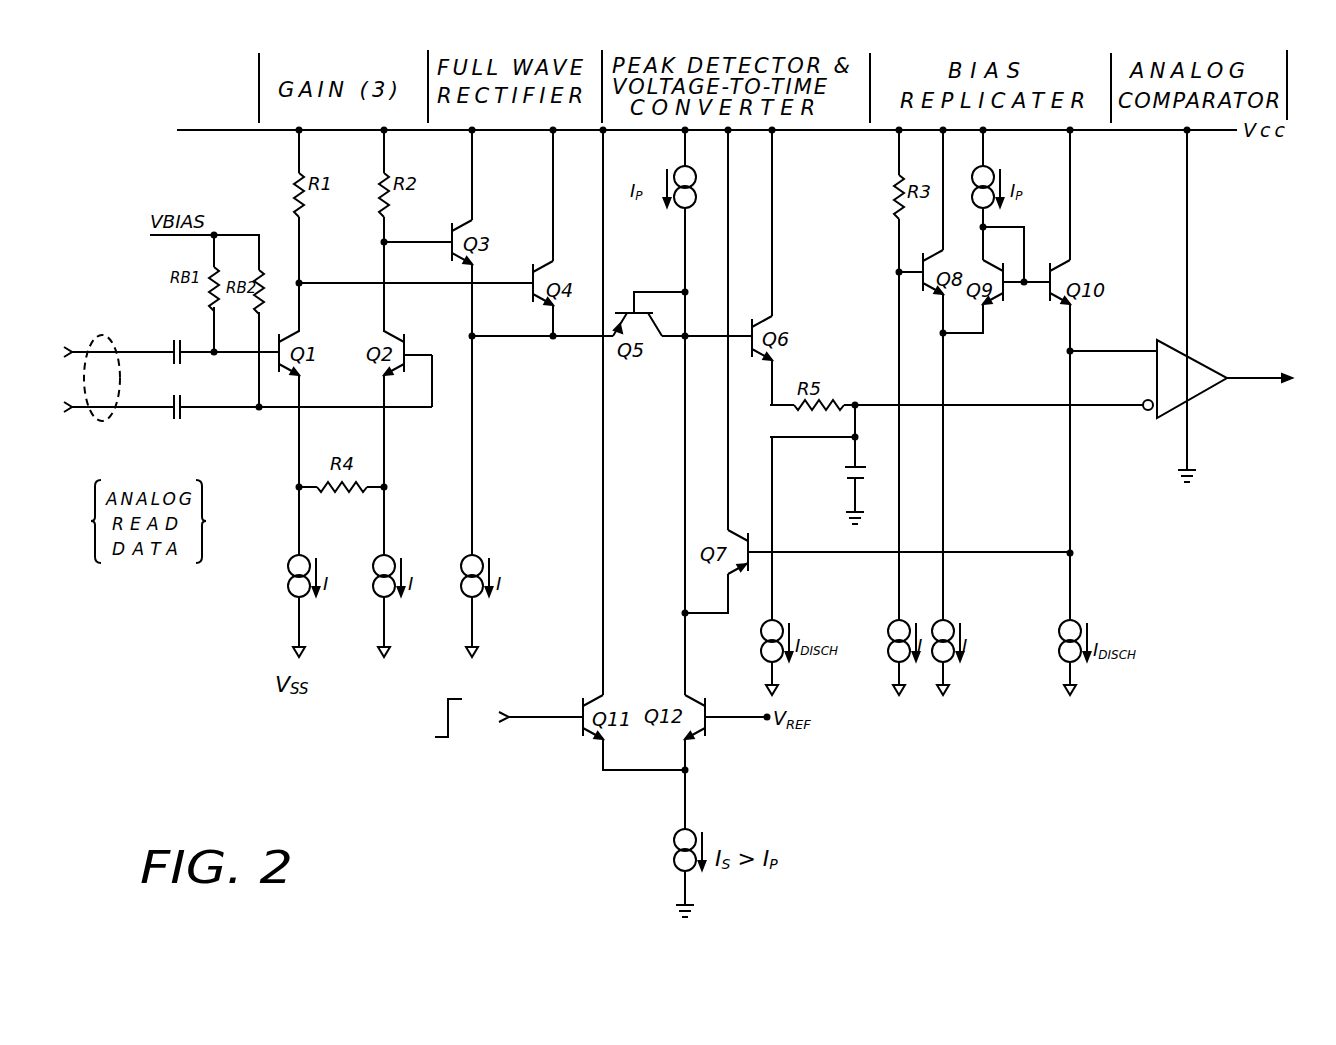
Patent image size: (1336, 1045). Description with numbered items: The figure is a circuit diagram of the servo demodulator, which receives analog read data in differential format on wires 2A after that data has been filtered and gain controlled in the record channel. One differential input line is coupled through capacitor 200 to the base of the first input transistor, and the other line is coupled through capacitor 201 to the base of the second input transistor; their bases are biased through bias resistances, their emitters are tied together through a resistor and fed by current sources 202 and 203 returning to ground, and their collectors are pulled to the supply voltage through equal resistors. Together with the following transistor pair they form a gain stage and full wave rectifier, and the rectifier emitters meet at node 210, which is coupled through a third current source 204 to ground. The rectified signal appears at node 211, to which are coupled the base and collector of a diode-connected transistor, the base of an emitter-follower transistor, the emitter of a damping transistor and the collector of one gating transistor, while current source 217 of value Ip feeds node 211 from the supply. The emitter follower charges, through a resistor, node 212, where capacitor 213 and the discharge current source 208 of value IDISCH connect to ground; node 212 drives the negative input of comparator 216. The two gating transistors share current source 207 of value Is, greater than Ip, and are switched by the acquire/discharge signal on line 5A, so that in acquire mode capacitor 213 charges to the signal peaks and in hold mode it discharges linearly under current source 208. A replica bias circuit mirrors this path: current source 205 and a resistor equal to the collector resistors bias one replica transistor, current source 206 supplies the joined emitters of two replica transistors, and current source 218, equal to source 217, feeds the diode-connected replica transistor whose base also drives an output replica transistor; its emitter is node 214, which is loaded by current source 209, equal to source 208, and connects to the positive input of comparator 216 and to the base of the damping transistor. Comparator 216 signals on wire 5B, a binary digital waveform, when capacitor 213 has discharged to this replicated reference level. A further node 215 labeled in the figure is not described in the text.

The capacitor 200 is at (172, 343).
The capacitor 201 is at (177, 396).
The wires 2A is at (103, 420).
The current source 202 is at (288, 557).
The current source 203 is at (373, 557).
The third current source 204 is at (461, 557).
The current source 205 is at (888, 625).
The current source 206 is at (955, 622).
The current source 207 is at (673, 843).
The discharge current source 208 is at (760, 645).
The current source 209 is at (1058, 648).
The node 210 is at (553, 340).
The node 211 is at (685, 340).
The node 212 is at (855, 402).
The capacitor 213 is at (846, 472).
The node 214 is at (1068, 351).
The gain stage bias node 215 is at (300, 282).
The comparator 216 is at (1190, 358).
The current source 217 is at (696, 182).
The current source 218 is at (988, 172).
The acquire/discharge signal line 5A is at (542, 712).
The comparator output 5B is at (1232, 380).